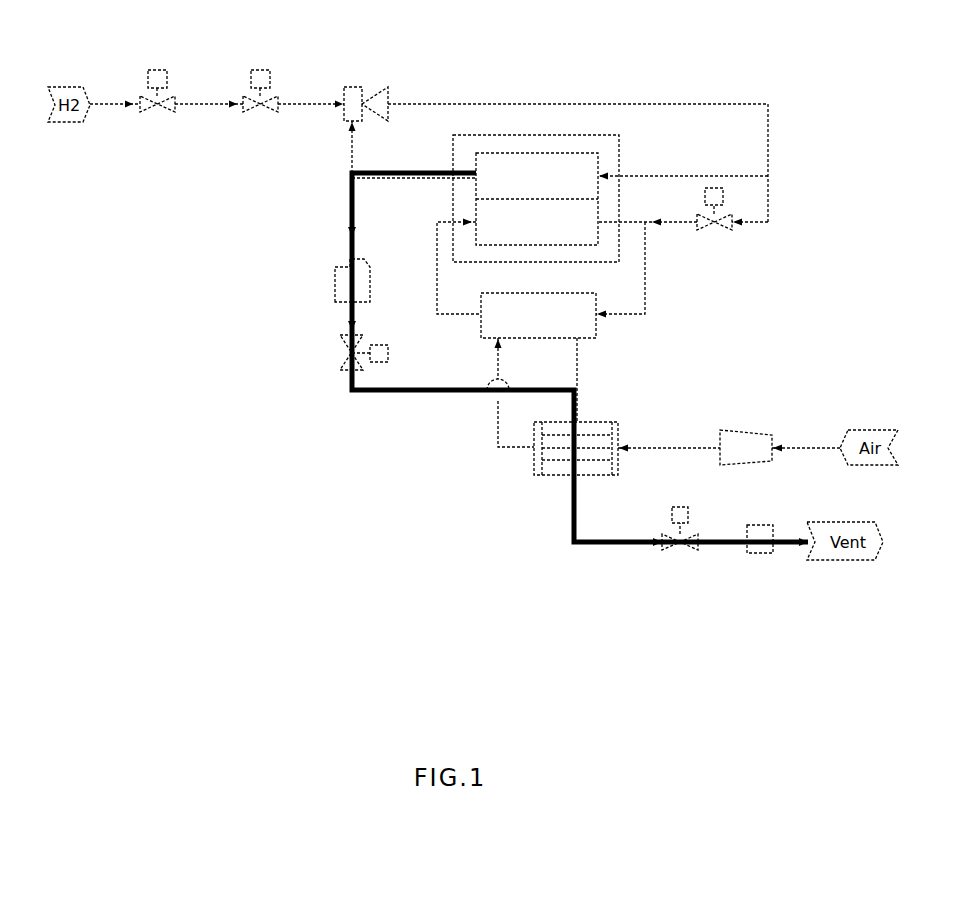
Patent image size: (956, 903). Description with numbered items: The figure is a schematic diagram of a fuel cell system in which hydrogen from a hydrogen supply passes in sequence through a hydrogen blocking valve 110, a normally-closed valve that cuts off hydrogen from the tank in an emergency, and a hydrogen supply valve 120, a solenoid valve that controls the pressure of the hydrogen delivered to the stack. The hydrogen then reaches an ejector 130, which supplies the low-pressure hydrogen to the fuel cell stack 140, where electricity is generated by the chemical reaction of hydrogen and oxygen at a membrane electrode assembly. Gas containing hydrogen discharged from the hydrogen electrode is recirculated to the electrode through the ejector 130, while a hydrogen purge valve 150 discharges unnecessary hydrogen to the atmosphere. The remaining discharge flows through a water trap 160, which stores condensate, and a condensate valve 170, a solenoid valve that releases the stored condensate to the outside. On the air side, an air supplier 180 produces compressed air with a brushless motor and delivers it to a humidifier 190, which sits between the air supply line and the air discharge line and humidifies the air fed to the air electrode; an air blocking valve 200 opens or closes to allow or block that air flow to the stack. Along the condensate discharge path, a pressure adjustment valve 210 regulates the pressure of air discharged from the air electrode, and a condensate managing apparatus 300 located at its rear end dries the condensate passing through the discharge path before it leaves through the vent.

The hydrogen blocking valve 110 is at (157, 69).
The hydrogen supply valve 120 is at (259, 69).
The ejector 130 is at (352, 86).
The fuel cell stack 140 is at (580, 134).
The hydrogen purge valve 150 is at (722, 232).
The water trap 160 is at (334, 284).
The condensate valve 170 is at (342, 357).
The air supplier 180 is at (730, 429).
The humidifier 190 is at (600, 421).
The air blocking valve 200 is at (598, 327).
The pressure adjustment valve 210 is at (672, 554).
The condensate managing apparatus 300 is at (757, 554).